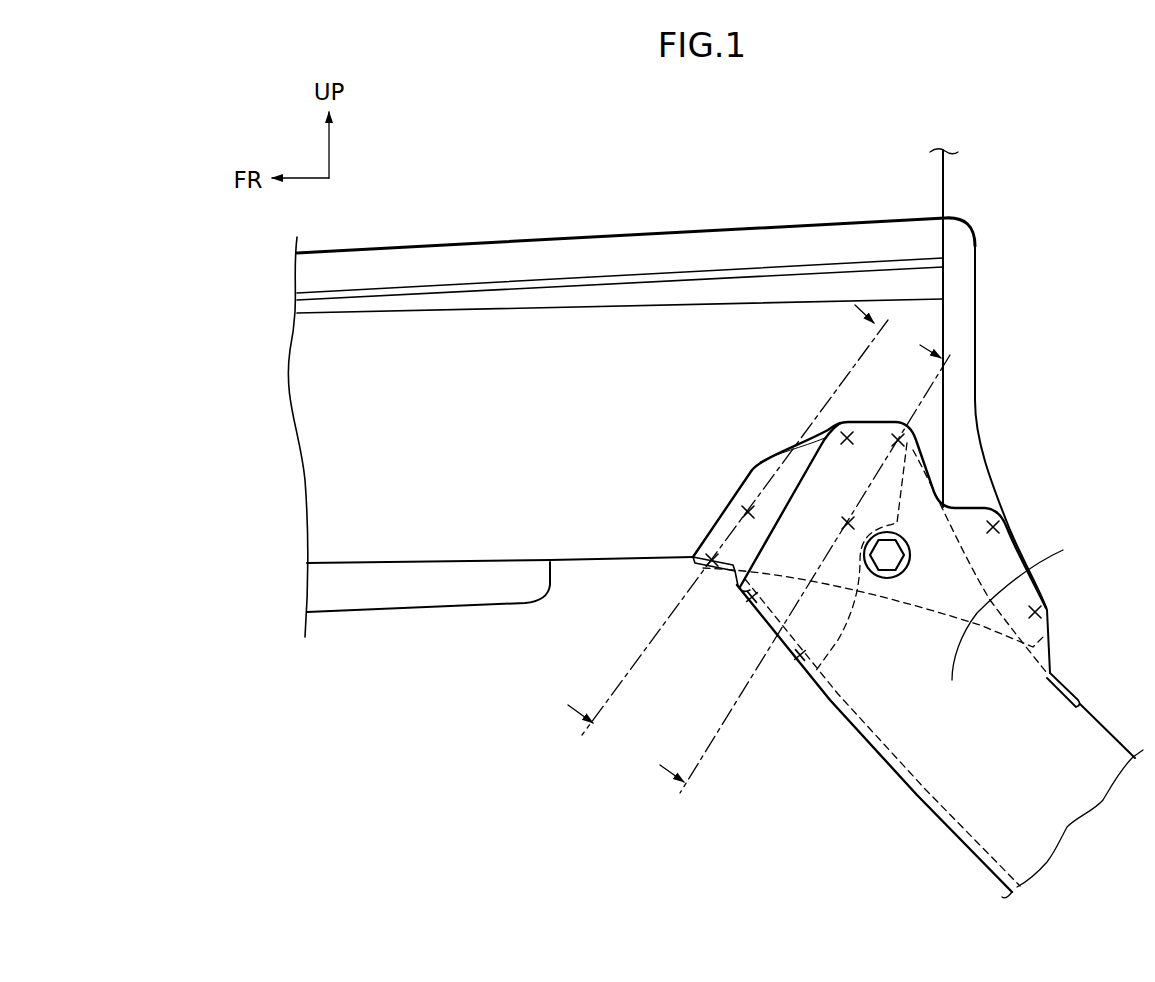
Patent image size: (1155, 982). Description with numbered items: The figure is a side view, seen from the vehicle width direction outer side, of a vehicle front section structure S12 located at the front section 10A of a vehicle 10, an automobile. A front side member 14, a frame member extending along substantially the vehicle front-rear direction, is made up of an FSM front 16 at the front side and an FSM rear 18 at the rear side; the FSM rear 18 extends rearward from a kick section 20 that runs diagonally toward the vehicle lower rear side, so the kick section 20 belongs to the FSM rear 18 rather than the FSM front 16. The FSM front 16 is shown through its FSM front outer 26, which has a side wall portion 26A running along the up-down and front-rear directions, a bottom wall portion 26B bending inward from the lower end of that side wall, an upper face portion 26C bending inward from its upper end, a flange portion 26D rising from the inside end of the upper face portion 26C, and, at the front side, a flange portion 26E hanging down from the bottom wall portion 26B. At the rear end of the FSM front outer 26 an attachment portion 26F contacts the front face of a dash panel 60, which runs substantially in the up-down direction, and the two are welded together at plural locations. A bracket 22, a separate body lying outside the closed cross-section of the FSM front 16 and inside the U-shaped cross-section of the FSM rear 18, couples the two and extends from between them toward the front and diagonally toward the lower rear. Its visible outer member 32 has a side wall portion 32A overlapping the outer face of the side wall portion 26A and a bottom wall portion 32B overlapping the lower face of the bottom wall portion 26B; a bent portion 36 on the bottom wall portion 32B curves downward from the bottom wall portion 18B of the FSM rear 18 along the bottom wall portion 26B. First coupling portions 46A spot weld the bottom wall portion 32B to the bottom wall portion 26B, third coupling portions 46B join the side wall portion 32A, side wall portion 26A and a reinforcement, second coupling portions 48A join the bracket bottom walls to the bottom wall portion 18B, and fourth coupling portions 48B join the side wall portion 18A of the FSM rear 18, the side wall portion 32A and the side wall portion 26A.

The vehicle 10 is at (715, 502).
The front section 10A is at (583, 190).
The front side member 14 is at (519, 212).
The front side member front (FSM front) 16 is at (731, 226).
The front side member rear (FSM rear) 18 is at (903, 790).
The side wall portion 18A is at (1022, 617).
The bottom wall portion 18B is at (823, 702).
The kick section 20 is at (885, 728).
The bracket 22 is at (747, 486).
The FSM front outer 26 is at (763, 336).
The side wall portion 26A is at (420, 353).
The bottom wall portion 26B is at (618, 563).
The upper face portion 26C is at (683, 290).
The flange portion 26D is at (833, 245).
The flange portion 26E is at (425, 600).
The attachment portion 26F is at (963, 402).
The outer member 32 is at (832, 647).
The side wall portion 32A is at (787, 480).
The bottom wall portion 32B is at (712, 570).
The bent portion 36 is at (730, 578).
The first coupling portion 46A is at (710, 557).
The third coupling portion 46B is at (745, 508).
The second coupling portion 48A is at (755, 597).
The fourth coupling portion 48B is at (860, 433).
The dash panel 60 is at (955, 185).
The vehicle front section structure S12 is at (594, 673).